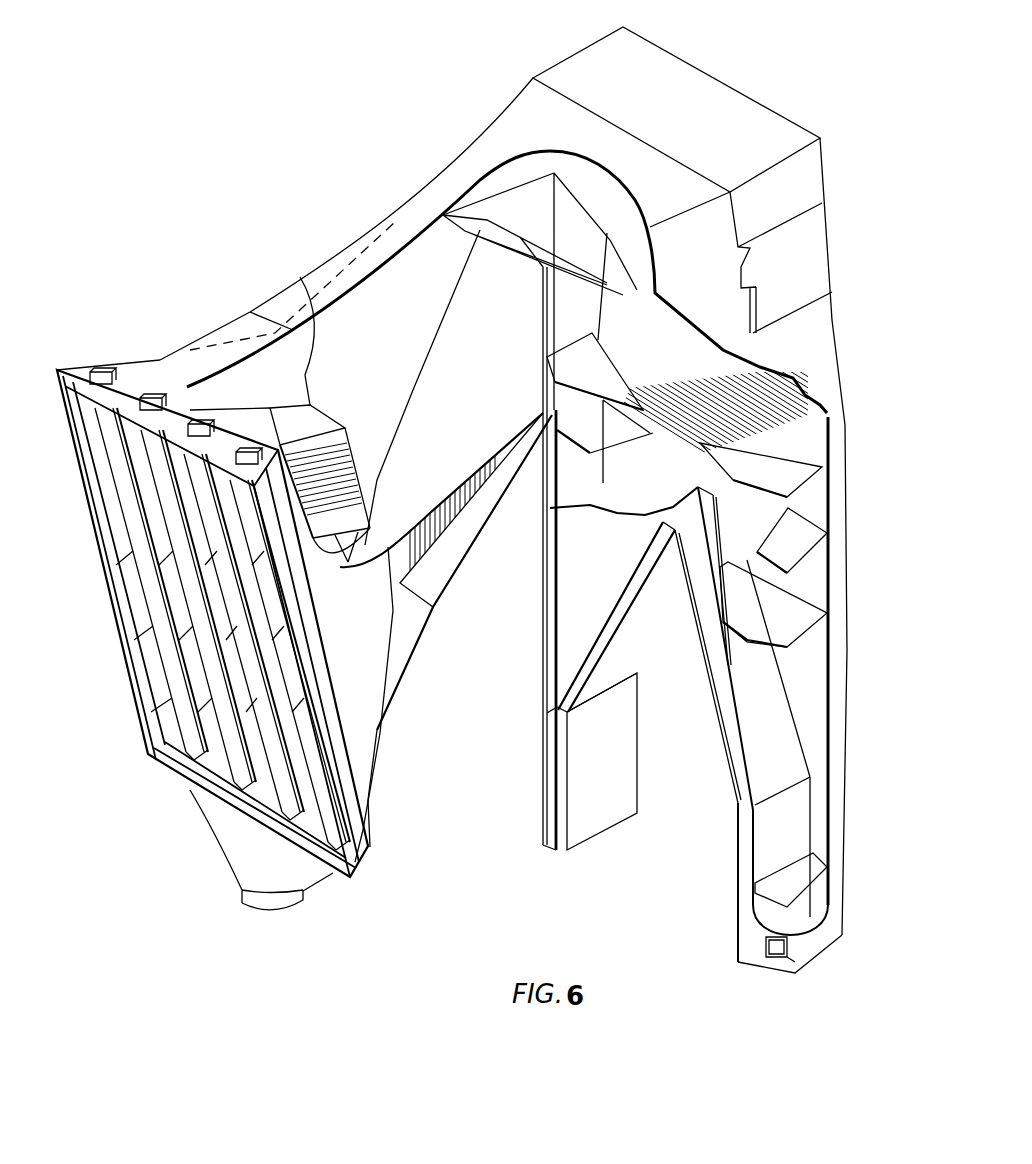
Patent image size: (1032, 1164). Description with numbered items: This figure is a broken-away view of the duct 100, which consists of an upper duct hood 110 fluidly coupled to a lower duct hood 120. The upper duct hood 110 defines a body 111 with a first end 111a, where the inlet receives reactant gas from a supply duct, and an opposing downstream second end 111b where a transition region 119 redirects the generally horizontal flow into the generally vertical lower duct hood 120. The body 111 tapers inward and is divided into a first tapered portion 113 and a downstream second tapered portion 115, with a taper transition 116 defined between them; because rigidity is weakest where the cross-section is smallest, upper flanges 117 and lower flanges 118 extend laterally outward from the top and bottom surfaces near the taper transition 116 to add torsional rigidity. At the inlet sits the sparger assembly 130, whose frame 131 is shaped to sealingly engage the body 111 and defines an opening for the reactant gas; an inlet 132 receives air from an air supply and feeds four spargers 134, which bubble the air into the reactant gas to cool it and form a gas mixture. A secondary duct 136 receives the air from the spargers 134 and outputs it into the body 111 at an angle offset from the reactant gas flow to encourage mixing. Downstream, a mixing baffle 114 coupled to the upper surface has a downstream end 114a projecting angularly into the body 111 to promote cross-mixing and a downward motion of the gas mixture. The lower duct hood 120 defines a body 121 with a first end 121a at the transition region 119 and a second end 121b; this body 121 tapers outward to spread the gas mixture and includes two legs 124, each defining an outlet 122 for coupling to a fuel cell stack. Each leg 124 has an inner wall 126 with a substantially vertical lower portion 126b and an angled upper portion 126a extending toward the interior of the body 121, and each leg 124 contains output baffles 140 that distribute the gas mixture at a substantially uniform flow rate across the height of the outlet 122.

The duct 100 is at (178, 118).
The upper duct hood 110 is at (368, 220).
The body 111 is at (327, 277).
The first end 111a is at (120, 352).
The second end 111b is at (420, 188).
The first tapered portion 113 is at (368, 608).
The mixing baffle 114 is at (517, 247).
The downstream end 114a is at (593, 287).
The second tapered portion 115 is at (455, 458).
The taper transition 116 is at (303, 320).
The upper flanges 117 is at (245, 327).
The lower flanges 118 is at (385, 612).
The transition region 119 is at (775, 158).
The lower duct hood 120 is at (850, 550).
The body 121 is at (830, 520).
The first end 121a is at (830, 202).
The second end 121b is at (825, 938).
The outlet 122 is at (557, 712).
The legs 124 is at (848, 755).
The inner wall 126 is at (602, 717).
The upper portion 126a is at (763, 720).
The lower portion 126b is at (790, 817).
The sparger assembly 130 is at (57, 375).
The frame 131 is at (353, 803).
The inlet 132 is at (288, 915).
The spargers 134 is at (240, 537).
The secondary duct 136 is at (270, 423).
The output baffles 140 is at (618, 430).